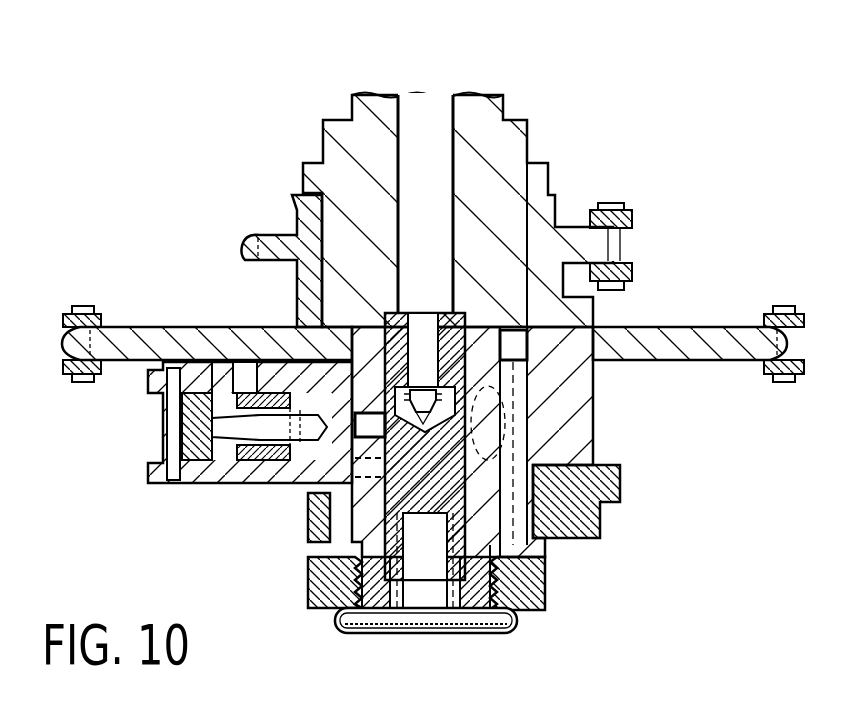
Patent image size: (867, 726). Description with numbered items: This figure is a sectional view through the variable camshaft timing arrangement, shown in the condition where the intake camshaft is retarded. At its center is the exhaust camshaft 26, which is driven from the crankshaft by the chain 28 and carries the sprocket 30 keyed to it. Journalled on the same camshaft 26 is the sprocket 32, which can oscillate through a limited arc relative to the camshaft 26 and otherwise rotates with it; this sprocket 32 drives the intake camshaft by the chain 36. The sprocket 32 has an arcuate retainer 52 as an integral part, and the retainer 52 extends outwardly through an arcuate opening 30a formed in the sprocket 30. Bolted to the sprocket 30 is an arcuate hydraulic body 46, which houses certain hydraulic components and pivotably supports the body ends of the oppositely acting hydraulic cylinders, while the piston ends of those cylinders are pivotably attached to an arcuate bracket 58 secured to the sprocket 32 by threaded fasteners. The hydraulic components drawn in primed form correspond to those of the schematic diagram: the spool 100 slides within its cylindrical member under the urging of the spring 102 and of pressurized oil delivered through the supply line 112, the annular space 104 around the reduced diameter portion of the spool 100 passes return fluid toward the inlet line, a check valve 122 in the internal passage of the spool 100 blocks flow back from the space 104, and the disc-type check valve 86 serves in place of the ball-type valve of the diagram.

The exhaust camshaft 26 is at (315, 177).
The chain 28 is at (86, 380).
The sprocket 30 is at (136, 348).
The arcuate opening 30a is at (600, 327).
The sprocket 32 is at (268, 258).
The chain 36 is at (624, 207).
The arcuate hydraulic body 46 is at (185, 483).
The arcuate retainer 52 is at (585, 411).
The arcuate bracket 58 is at (605, 522).
The check valve 86 is at (246, 482).
The spool 100 is at (415, 582).
The spring 102 is at (458, 622).
The annular space 104 is at (360, 425).
The supply line 112 is at (437, 113).
The check valve 122 is at (420, 430).